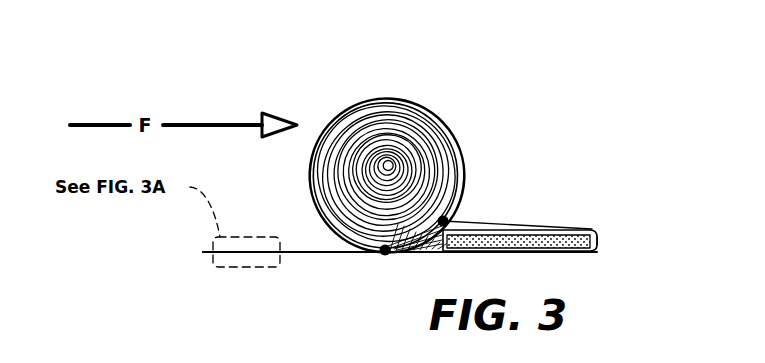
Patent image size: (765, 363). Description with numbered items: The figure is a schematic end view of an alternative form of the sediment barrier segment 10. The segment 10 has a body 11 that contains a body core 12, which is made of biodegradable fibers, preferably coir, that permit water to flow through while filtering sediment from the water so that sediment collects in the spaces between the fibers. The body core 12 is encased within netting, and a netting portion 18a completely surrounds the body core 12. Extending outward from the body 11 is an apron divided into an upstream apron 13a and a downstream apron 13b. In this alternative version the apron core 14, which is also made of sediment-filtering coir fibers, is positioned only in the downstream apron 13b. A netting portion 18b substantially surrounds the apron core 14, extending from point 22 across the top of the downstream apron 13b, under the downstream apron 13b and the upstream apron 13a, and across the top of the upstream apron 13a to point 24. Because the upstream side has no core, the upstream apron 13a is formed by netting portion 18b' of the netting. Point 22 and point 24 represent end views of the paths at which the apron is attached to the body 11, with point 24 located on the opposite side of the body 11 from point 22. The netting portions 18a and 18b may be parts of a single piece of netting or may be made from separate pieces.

The sediment barrier segment 10 is at (428, 80).
The body 11 is at (462, 114).
The body core 12 is at (430, 157).
The upstream apron 13a is at (297, 238).
The downstream apron 13b is at (542, 214).
The apron core 14 is at (597, 242).
The netting portion 18a is at (350, 105).
The netting portion 18b is at (539, 218).
The netting portion 18b' is at (287, 282).
The point 22 is at (448, 219).
The point 24 is at (390, 253).